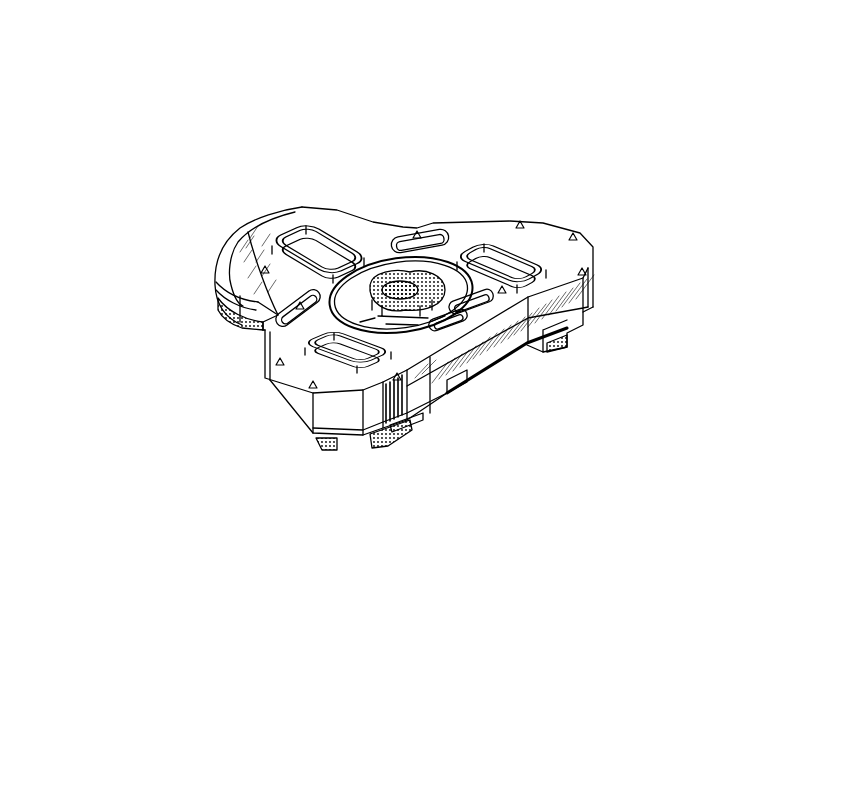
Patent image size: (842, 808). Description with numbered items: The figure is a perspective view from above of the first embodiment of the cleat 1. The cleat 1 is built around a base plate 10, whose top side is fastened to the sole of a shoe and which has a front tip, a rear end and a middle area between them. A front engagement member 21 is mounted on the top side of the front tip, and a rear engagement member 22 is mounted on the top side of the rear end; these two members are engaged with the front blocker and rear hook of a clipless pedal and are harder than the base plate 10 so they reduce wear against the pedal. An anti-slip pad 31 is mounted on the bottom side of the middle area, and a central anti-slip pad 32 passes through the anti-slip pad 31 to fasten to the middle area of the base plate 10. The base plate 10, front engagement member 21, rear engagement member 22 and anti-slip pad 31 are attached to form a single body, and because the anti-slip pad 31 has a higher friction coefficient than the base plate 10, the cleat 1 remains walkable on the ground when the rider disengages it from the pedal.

The cleat 1 is at (247, 447).
The base plate 10 is at (478, 232).
The front engagement member 21 is at (232, 236).
The rear engagement member 22 is at (488, 343).
The anti-slip pad 31 is at (240, 330).
The central anti-slip pad 32 is at (392, 277).